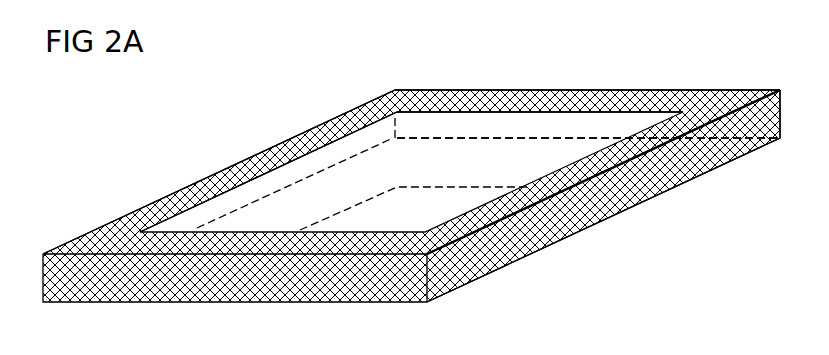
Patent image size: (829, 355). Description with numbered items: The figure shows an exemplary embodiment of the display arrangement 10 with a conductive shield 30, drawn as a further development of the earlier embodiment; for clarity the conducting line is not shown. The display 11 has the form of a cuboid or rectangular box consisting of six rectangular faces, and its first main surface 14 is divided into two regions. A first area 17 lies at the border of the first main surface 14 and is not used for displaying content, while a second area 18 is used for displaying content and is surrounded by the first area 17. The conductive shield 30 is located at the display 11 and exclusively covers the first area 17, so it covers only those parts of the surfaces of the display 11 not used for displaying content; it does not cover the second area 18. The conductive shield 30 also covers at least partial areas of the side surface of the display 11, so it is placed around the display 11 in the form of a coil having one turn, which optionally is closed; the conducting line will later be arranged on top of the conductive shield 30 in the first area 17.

The display arrangement 10 is at (196, 128).
The display 11 is at (530, 152).
The first main surface 14 is at (466, 122).
The first area 17 is at (312, 138).
The second area 18 is at (277, 190).
The conductive shield 30 is at (616, 210).